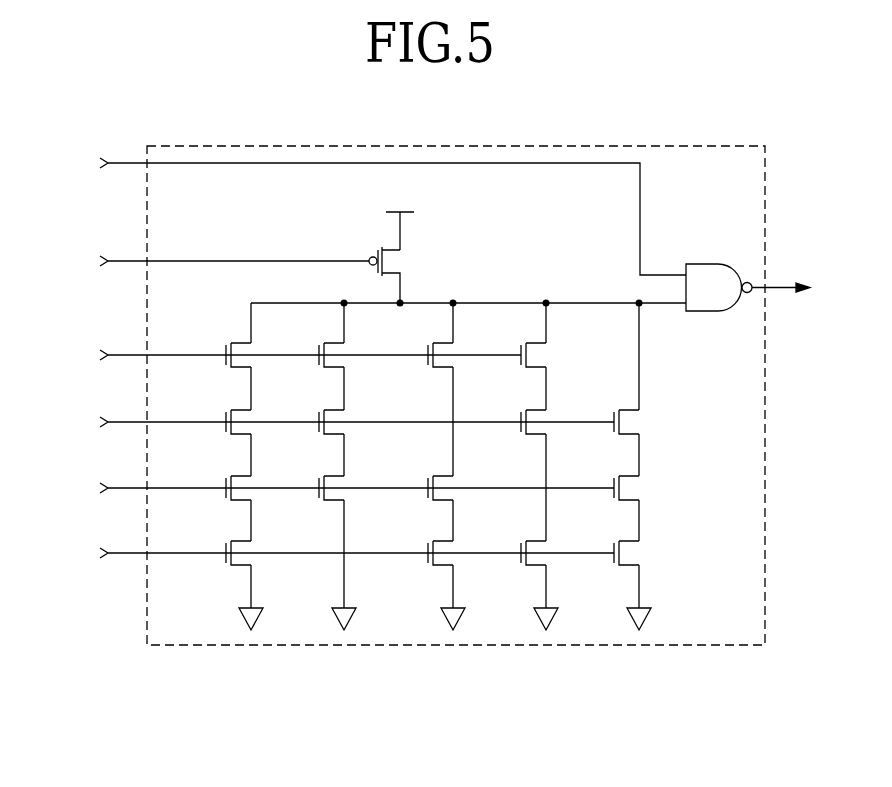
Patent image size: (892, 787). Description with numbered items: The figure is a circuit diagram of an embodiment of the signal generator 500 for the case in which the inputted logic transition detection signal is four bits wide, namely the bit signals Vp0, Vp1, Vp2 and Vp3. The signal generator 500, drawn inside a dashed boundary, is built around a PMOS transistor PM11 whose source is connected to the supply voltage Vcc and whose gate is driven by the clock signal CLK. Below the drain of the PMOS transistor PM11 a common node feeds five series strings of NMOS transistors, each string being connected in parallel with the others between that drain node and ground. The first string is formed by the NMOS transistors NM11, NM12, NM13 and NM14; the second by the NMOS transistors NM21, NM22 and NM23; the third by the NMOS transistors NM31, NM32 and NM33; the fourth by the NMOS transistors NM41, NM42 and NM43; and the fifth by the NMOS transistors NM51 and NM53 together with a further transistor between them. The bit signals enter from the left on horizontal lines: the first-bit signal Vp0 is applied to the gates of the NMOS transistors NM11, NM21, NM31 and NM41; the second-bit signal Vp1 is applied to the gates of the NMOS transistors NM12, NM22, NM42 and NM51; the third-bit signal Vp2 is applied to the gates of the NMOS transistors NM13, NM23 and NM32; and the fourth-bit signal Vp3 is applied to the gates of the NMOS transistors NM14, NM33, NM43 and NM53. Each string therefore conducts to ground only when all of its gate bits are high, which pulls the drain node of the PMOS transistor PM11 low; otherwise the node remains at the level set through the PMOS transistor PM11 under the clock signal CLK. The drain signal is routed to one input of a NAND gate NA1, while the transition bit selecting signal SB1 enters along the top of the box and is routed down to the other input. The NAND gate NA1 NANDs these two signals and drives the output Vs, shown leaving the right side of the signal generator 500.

The signal generator 500 is at (652, 146).
The transition bit selecting signal SB1 is at (368, 212).
The clock signal CLK is at (205, 262).
The first-bit signal of the logic transition detection signal Vp0 is at (285, 355).
The second-bit signal of the logic transition detection signal Vp1 is at (332, 422).
The third-bit signal of the logic transition detection signal Vp2 is at (332, 488).
The fourth-bit signal of the logic transition detection signal Vp3 is at (332, 553).
The supply voltage Vcc is at (398, 216).
The output signal of the signal generator Vs is at (785, 268).
The PMOS transistor PM11 is at (418, 275).
The NAND gate NA1 is at (719, 304).
The NMOS transistor NM11 is at (213, 341).
The NMOS transistor NM12 is at (213, 408).
The NMOS transistor NM13 is at (213, 474).
The NMOS transistor NM14 is at (213, 539).
The NMOS transistor NM21 is at (306, 341).
The NMOS transistor NM22 is at (306, 408).
The NMOS transistor NM23 is at (306, 474).
The NMOS transistor NM31 is at (415, 341).
The NMOS transistor NM32 is at (415, 474).
The NMOS transistor NM33 is at (415, 539).
The NMOS transistor NM41 is at (508, 341).
The NMOS transistor NM42 is at (554, 441).
The NMOS transistor NM43 is at (508, 539).
The NMOS transistor NM51 is at (601, 408).
The NMOS transistor NM53 is at (601, 539).